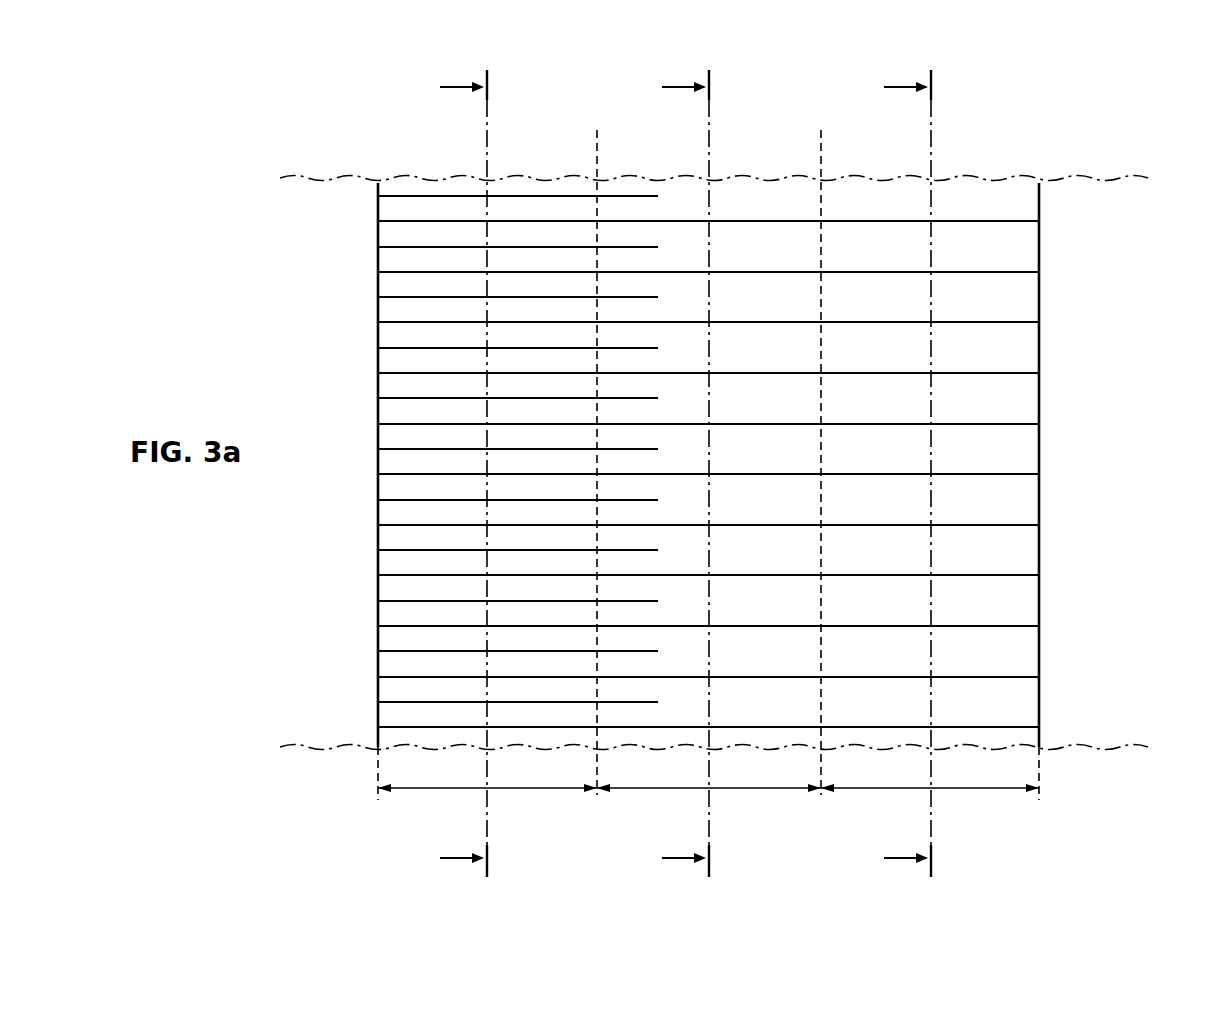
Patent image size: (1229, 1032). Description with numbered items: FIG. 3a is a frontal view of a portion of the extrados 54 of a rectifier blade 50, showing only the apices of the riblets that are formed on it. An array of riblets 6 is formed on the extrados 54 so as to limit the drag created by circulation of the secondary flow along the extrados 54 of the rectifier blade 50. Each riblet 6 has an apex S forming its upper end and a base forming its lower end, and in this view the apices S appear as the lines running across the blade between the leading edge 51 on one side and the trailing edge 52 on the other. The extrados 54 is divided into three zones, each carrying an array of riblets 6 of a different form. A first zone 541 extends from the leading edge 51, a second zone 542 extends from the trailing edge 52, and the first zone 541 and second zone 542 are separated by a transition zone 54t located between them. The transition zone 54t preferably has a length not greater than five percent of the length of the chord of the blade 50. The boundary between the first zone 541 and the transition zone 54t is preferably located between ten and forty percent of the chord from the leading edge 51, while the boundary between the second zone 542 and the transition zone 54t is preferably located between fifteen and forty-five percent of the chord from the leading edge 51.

The rectifier blade 50 is at (743, 475).
The leading edge 51 is at (366, 412).
The trailing edge 52 is at (1052, 411).
The extrados 54 is at (1020, 200).
The first zone 541 is at (537, 788).
The second zone 542 is at (980, 788).
The transition zone 54t is at (758, 788).
The riblets 6 is at (993, 626).
The apex S is at (421, 196).